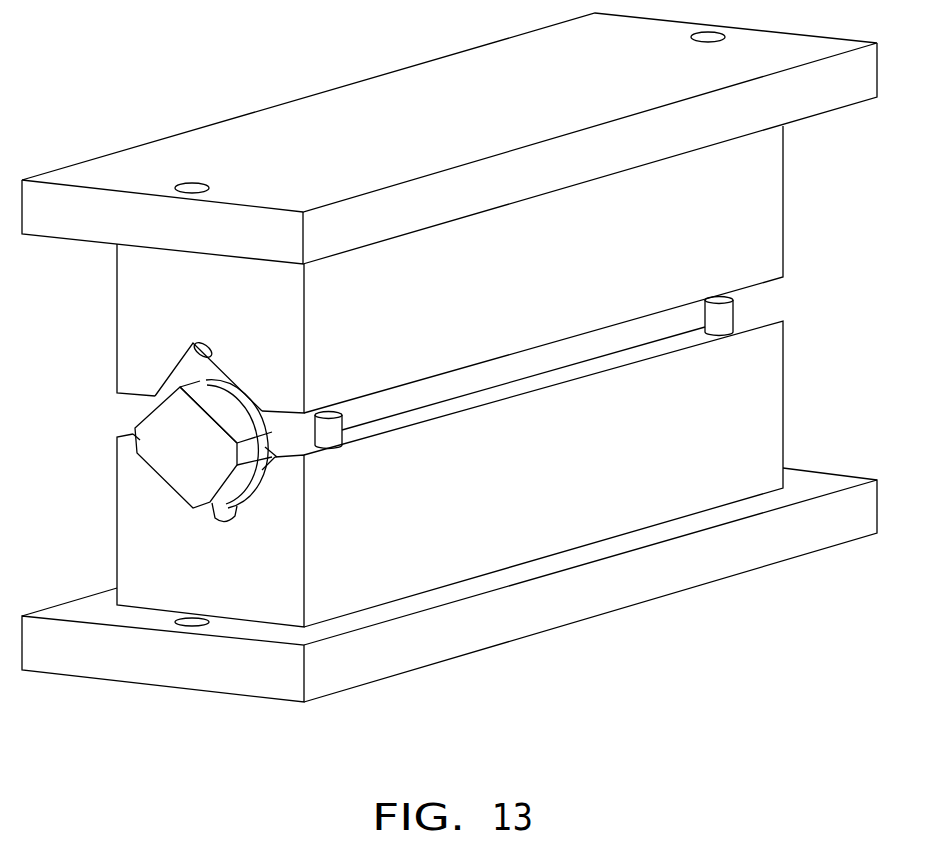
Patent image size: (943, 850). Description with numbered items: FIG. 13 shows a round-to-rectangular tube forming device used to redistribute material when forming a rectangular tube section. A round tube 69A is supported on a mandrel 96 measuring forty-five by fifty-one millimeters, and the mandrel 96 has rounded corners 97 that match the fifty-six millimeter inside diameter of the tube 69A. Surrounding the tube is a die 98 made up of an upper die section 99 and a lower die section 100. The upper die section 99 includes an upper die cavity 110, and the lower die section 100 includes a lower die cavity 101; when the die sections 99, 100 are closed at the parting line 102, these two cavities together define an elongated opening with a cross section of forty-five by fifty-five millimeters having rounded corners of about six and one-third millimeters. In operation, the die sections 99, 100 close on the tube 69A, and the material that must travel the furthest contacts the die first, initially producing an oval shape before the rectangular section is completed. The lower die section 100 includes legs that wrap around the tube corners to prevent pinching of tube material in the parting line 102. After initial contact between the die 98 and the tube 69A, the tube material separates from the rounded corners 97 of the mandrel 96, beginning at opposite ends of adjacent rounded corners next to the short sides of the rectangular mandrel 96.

The die 98 is at (802, 225).
The upper die section 99 is at (762, 177).
The lower die section 100 is at (766, 394).
The upper die cavity 110 is at (194, 343).
The round tube 69A is at (287, 435).
The parting line 102 is at (520, 388).
The mandrel 96 is at (172, 457).
The rounded corners 97 is at (209, 505).
The lower die cavity 101 is at (235, 513).